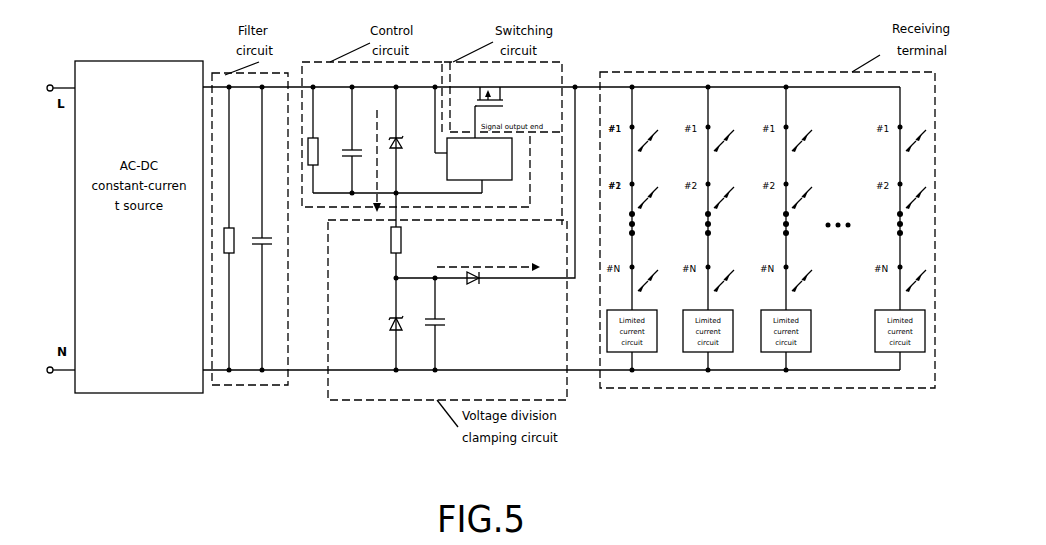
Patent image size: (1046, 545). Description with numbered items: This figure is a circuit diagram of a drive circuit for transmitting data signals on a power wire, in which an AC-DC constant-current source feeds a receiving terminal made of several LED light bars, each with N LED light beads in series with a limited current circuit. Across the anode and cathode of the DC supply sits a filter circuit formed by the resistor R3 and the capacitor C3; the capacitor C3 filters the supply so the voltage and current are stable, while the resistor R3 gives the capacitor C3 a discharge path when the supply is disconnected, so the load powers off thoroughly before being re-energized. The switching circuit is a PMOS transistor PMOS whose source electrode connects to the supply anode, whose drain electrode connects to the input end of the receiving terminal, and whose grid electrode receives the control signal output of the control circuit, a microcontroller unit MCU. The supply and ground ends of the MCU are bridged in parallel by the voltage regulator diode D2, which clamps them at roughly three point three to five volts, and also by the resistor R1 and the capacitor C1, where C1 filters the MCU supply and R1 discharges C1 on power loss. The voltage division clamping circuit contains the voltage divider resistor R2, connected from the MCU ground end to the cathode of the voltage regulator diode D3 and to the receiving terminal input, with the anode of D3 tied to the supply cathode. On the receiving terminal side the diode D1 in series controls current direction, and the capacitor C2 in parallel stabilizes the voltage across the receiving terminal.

The resistor R1 is at (322, 140).
The capacitor C1 is at (358, 140).
The voltage regulator diode D2 is at (406, 140).
The microcontroller unit MCU is at (464, 140).
The PMOS transistor PMOS is at (484, 91).
The voltage divider resistor R2 is at (384, 235).
The voltage regulator diode D3 is at (385, 324).
The capacitor C2 is at (445, 324).
The diode D1 is at (473, 293).
The resistor R3 is at (237, 228).
The capacitor C3 is at (268, 228).